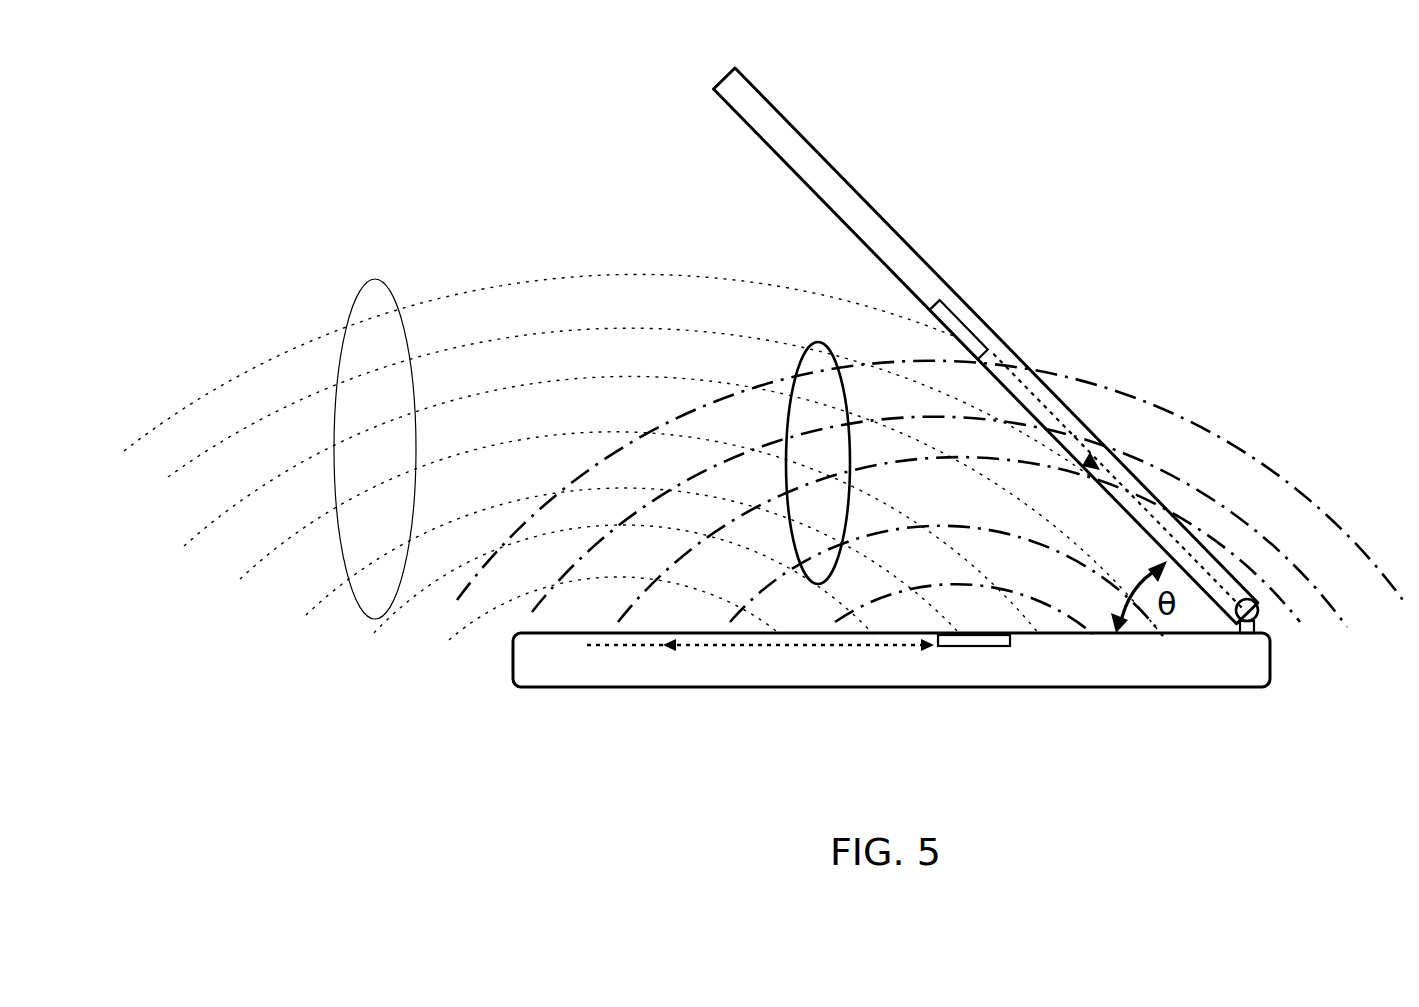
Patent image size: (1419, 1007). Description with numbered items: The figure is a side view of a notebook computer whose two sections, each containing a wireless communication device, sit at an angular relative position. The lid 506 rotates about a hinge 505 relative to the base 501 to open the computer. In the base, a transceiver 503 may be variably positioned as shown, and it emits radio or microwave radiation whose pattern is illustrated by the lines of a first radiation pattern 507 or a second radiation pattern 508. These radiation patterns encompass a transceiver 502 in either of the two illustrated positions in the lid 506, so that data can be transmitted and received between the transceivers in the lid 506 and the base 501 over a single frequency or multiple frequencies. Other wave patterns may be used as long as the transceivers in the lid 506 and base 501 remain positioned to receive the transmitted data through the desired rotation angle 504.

The base 501 is at (510, 670).
The transceiver 502 is at (950, 322).
The transceiver 503 is at (608, 647).
The rotation angle 504 is at (1183, 598).
The hinge 505 is at (1257, 614).
The lid 506 is at (835, 160).
The radiation pattern 507 is at (378, 280).
The radiation pattern 508 is at (820, 343).